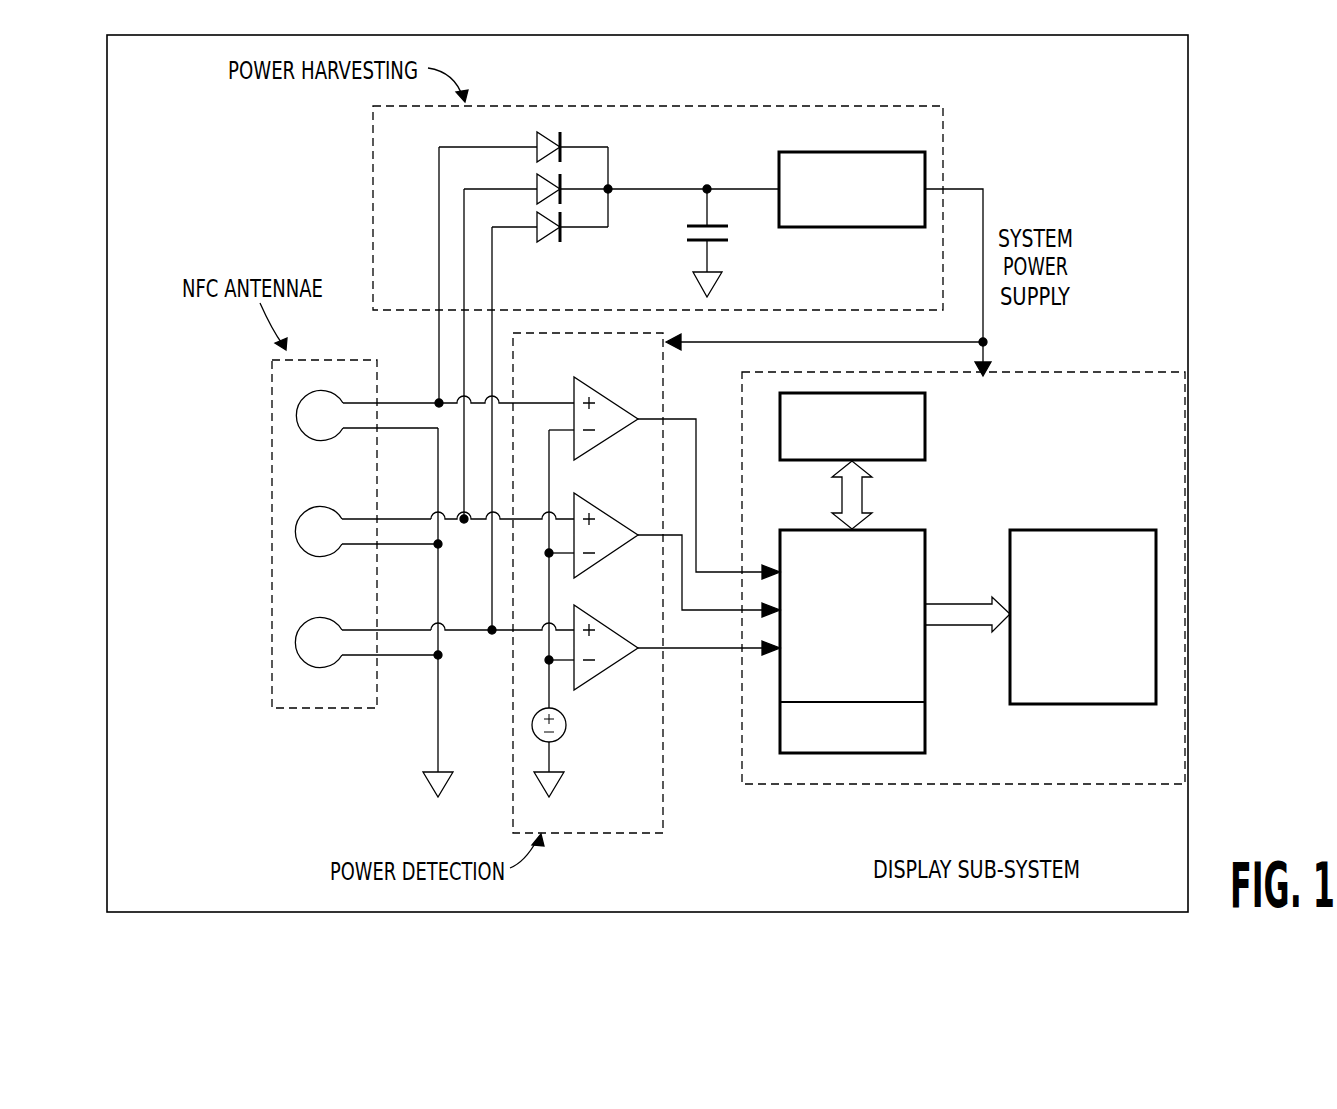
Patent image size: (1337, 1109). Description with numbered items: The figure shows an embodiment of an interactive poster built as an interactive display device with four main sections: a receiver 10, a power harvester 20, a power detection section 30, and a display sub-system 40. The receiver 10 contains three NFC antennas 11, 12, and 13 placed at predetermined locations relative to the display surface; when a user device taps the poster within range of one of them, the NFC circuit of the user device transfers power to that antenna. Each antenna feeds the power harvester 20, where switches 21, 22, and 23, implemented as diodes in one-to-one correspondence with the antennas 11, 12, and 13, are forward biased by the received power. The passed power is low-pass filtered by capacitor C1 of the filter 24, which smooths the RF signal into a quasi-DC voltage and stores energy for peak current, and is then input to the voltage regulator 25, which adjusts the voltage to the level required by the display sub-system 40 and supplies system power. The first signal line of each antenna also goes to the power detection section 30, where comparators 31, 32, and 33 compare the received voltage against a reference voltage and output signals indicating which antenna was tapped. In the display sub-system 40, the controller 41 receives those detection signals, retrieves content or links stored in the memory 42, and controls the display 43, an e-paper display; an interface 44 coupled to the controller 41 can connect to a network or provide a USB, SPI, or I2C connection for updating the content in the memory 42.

The receiver 10 is at (272, 367).
The antenna 11 is at (297, 418).
The antenna 12 is at (298, 525).
The antenna 13 is at (298, 636).
The power harvester 20 is at (717, 106).
The switch 21 is at (563, 140).
The switch 22 is at (535, 182).
The switch 23 is at (565, 236).
The filter 24 is at (730, 243).
The voltage regulator 25 is at (845, 228).
The power detection section 30 is at (638, 833).
The comparator 31 is at (595, 392).
The comparator 32 is at (595, 507).
The comparator 33 is at (595, 622).
The display sub-system 40 is at (922, 792).
The controller 41 is at (928, 555).
The memory 42 is at (926, 422).
The display 43 is at (1101, 530).
The interface 44 is at (926, 725).